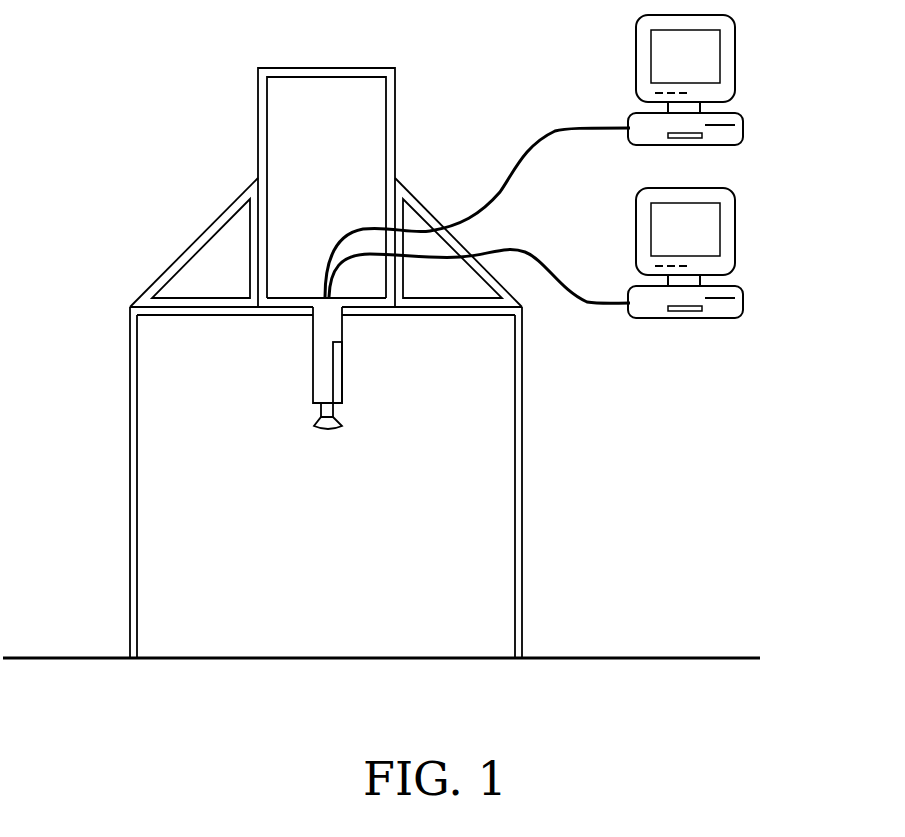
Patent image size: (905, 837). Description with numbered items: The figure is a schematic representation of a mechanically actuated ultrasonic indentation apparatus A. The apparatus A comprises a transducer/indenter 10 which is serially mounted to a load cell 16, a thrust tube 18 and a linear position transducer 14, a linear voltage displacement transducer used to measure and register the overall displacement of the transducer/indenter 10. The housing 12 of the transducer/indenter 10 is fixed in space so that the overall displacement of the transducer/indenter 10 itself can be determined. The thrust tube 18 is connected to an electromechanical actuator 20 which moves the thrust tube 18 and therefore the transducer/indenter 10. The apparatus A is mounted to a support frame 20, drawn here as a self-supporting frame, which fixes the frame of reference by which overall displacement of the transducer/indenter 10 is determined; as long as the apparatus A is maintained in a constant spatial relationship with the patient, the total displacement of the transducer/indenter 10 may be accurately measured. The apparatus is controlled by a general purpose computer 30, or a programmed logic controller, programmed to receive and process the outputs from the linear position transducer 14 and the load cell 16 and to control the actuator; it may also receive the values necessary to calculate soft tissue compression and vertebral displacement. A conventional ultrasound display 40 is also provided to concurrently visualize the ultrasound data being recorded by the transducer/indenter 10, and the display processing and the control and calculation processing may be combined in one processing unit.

The transducer/indenter 10 is at (348, 383).
The housing 12 is at (313, 332).
The linear position transducer 14 is at (340, 373).
The load cell 16 is at (315, 418).
The thrust tube 18 is at (335, 408).
The support frame 20 is at (522, 407).
The general purpose computer 30 is at (750, 300).
The ultrasound display 40 is at (753, 123).
The ultrasonic indentation apparatus A is at (262, 408).